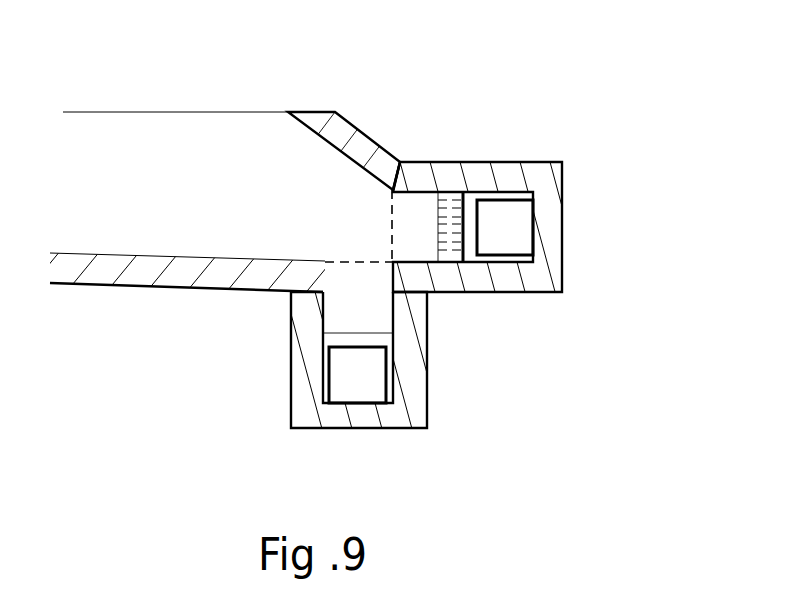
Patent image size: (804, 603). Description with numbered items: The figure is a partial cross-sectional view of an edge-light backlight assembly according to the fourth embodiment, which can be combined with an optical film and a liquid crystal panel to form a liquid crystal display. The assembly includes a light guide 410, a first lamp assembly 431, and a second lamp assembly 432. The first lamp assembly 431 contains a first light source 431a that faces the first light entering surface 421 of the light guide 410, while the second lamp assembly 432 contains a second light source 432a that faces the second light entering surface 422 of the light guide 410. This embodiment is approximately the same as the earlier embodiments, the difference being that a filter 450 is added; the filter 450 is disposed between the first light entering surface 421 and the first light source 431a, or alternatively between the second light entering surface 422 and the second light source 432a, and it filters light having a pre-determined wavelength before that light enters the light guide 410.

The light guide 410 is at (157, 137).
The first light entering surface 421 is at (392, 223).
The second light entering surface 422 is at (348, 260).
The first lamp assembly 431 is at (570, 142).
The first light source 431a is at (502, 228).
The second lamp assembly 432 is at (358, 442).
The second light source 432a is at (362, 377).
The filter 450 is at (448, 262).